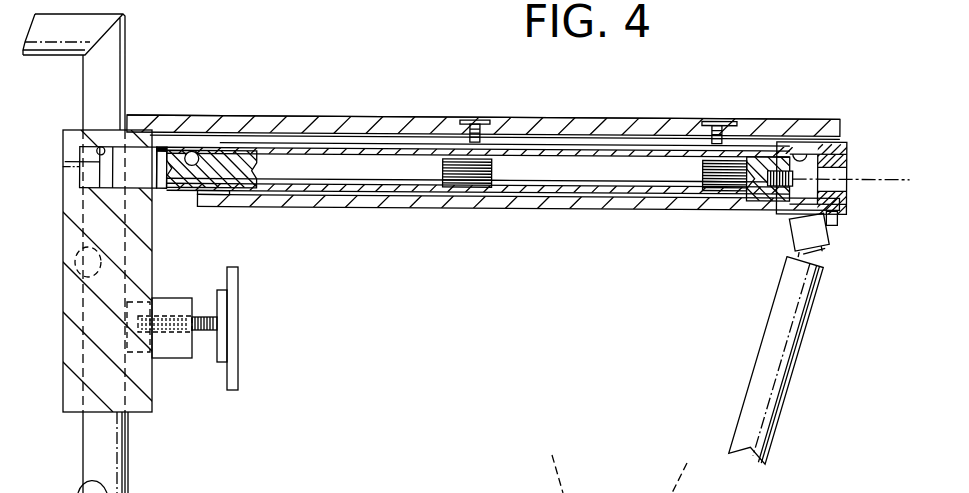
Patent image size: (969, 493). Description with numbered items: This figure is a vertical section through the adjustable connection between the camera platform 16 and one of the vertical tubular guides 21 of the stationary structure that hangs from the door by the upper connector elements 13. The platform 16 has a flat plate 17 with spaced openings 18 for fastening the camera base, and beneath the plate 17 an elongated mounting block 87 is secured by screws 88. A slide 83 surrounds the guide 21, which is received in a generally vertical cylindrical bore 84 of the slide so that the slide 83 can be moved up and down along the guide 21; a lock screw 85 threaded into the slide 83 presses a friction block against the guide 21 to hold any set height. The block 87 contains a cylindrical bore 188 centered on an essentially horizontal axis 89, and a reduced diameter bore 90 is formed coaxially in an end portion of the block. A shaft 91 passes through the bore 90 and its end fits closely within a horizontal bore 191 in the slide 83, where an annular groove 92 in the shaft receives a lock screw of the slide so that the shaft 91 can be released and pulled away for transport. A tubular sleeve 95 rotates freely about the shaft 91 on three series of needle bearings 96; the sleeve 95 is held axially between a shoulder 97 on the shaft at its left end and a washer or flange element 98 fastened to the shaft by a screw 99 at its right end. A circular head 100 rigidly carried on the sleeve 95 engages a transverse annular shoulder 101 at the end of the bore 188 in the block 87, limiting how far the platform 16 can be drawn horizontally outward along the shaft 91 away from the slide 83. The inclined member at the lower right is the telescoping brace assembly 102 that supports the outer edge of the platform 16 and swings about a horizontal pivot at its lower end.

The upper connector elements 13 is at (298, 490).
The platform 16 is at (405, 108).
The flat plate 17 is at (357, 115).
The spaced openings 18 is at (577, 478).
The tubular guides 21 is at (105, 443).
The slide 83 is at (130, 253).
The bore 84 is at (92, 253).
The lock screw 85 is at (240, 322).
The mounting block 87 is at (615, 207).
The screws 88 is at (478, 120).
The axis 89 is at (857, 173).
The reduced diameter bore 90 is at (196, 158).
The shaft 91 is at (580, 163).
The annular groove 92 is at (100, 162).
The tubular sleeve 95 is at (528, 147).
The needle bearings 96 is at (462, 168).
The shoulder 97 is at (168, 147).
The washer or flange element 98 is at (786, 152).
The screw 99 is at (793, 178).
The circular flange or head 100 is at (757, 207).
The transverse annular shoulder 101 is at (221, 142).
The brace assembly 102 is at (790, 408).
The cylindrical bore 188 is at (800, 147).
The horizontal bore 191 is at (102, 147).